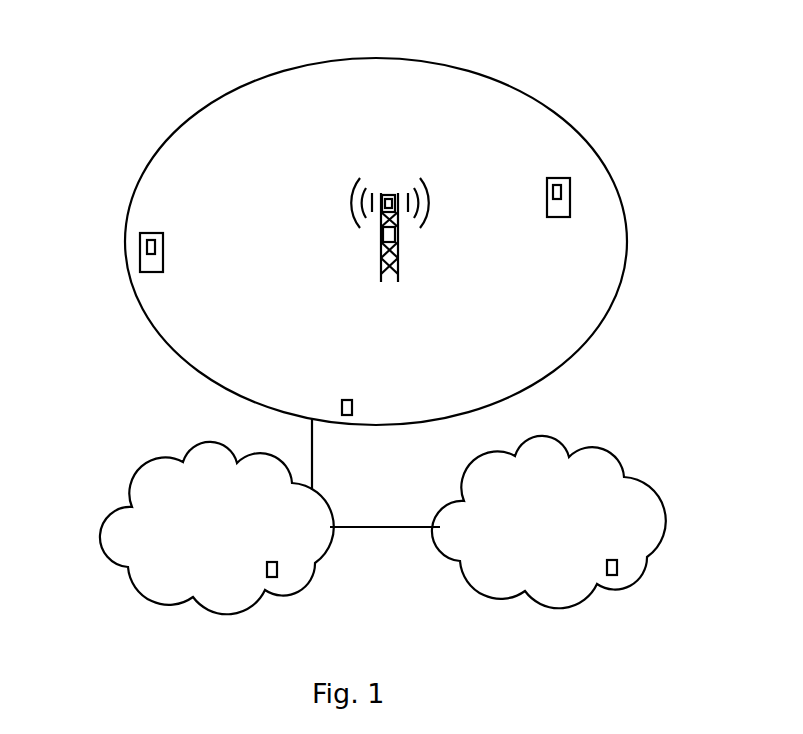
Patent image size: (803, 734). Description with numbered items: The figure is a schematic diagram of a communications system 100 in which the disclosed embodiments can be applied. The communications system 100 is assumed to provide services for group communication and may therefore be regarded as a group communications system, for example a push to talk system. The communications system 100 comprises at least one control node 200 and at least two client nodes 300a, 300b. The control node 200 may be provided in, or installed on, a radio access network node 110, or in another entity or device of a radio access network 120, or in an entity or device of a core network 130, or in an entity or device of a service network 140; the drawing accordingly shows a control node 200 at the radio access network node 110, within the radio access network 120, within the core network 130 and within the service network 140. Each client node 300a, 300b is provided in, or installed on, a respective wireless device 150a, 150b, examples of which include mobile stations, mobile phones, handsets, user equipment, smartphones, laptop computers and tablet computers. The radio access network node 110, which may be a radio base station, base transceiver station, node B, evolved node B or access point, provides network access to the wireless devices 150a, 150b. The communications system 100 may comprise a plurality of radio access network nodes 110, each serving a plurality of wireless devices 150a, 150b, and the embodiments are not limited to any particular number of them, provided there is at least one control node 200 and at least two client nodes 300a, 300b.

The communications system 100 is at (622, 64).
The radio access network node 110 is at (381, 275).
The radio access network 120 is at (172, 349).
The core network 130 is at (217, 528).
The service network 140 is at (549, 522).
The wireless device 150a is at (163, 255).
The wireless device 150b is at (558, 218).
The control node 200 is at (399, 232).
The client node 300a is at (150, 235).
The client node 300b is at (549, 180).